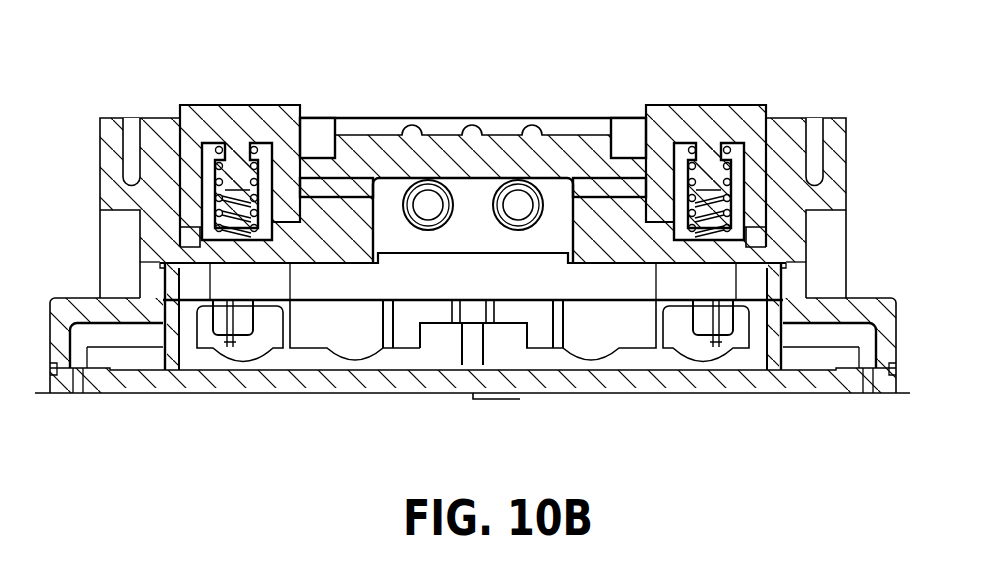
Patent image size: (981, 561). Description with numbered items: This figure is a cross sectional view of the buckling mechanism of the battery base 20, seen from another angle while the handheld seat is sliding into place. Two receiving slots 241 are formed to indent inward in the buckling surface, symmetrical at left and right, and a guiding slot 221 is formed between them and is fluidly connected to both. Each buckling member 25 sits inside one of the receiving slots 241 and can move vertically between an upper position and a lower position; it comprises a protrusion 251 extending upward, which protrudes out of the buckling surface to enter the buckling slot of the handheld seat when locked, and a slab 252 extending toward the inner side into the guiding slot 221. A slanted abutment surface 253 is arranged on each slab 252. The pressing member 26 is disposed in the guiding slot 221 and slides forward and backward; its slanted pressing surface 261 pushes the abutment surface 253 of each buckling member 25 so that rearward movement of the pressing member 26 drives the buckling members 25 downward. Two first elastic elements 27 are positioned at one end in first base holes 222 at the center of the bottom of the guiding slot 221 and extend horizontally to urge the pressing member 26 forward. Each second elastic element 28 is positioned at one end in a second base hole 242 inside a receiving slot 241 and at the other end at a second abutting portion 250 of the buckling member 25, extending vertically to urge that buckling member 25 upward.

The battery base 20 is at (142, 270).
The buckling member 25 is at (746, 246).
The second abutting portion 250 is at (708, 162).
The protrusion 251 is at (732, 222).
The slab 252 is at (618, 140).
The abutment surface 253 is at (595, 186).
The pressing member 26 is at (452, 172).
The pressing surface 261 is at (556, 130).
The first elastic element 27 is at (520, 225).
The second elastic element 28 is at (733, 215).
The guiding slot 221 is at (585, 330).
The first base hole 222 is at (484, 362).
The receiving slot 241 is at (684, 350).
The second base hole 242 is at (778, 270).